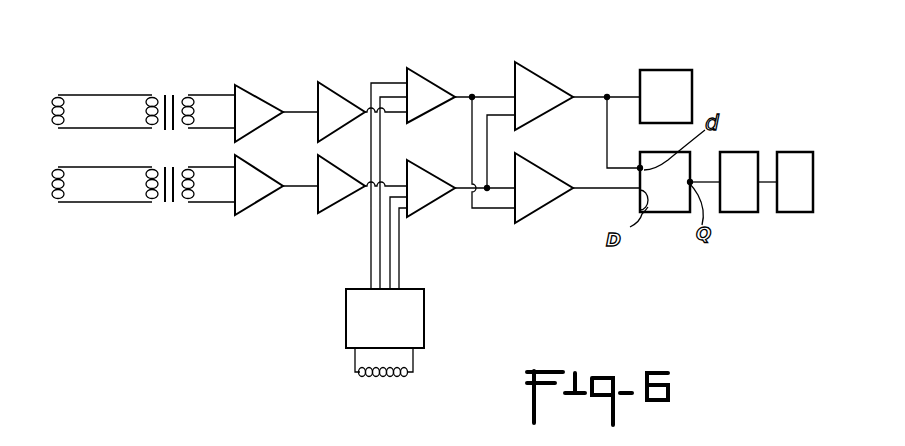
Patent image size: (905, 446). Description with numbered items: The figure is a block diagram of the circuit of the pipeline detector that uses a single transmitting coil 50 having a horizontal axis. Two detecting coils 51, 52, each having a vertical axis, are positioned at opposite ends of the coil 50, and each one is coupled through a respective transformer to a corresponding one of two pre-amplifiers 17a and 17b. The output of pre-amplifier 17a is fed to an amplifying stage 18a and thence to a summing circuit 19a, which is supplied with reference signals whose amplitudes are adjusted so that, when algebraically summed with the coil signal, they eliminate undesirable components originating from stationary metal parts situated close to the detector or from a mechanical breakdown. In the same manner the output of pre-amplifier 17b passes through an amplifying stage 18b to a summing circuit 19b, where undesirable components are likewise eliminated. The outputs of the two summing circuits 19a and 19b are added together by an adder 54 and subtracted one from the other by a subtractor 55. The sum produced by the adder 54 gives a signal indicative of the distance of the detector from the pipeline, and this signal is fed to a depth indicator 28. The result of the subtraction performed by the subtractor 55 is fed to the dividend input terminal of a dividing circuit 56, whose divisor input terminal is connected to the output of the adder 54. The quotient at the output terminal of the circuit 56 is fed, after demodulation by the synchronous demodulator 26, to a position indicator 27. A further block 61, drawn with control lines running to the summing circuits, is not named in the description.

The detecting coil 51 is at (60, 108).
The detecting coil 52 is at (62, 180).
The pre-amplifier 17a is at (247, 105).
The pre-amplifier 17b is at (253, 190).
The amplifying stage 18a is at (330, 105).
The amplifying stage 18b is at (330, 190).
The summing circuit 19a is at (422, 92).
The summing circuit 19b is at (423, 192).
The adder 54 is at (537, 91).
The subtractor 55 is at (540, 198).
The depth indicator 28 is at (670, 86).
The dividing circuit 56 is at (667, 202).
The synchronous demodulator 26 is at (740, 198).
The position indicator 27 is at (792, 200).
The control circuit 61 is at (385, 215).
The transmitting coil 50 is at (376, 377).